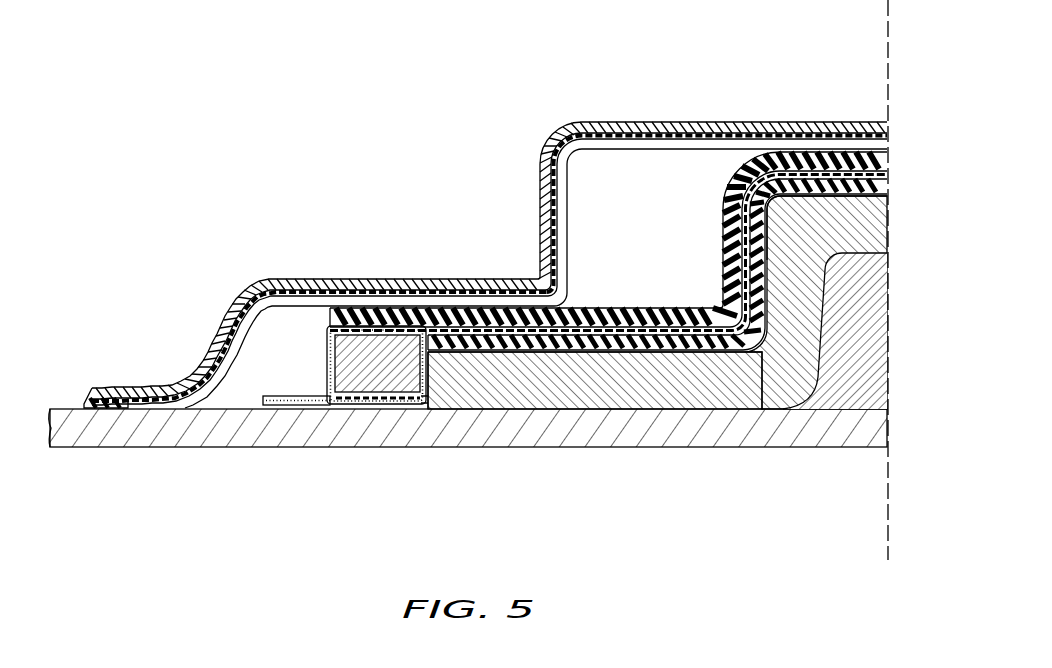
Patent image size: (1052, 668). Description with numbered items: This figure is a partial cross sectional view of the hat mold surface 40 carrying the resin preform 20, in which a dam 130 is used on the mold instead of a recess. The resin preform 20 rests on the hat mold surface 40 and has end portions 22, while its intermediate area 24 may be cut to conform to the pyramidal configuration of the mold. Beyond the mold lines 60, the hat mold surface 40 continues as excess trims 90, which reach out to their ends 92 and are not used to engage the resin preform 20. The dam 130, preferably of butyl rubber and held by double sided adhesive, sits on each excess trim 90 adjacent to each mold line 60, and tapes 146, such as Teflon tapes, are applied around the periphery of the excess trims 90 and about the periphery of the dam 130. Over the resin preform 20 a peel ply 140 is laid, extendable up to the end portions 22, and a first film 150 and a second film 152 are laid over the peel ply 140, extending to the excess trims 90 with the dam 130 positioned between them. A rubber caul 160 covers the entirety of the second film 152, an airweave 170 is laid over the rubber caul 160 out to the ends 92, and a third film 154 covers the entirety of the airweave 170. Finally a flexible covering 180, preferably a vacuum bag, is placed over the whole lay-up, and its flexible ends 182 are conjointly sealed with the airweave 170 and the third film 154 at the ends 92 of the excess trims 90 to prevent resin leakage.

The resin preform 20 is at (667, 380).
The end portions 22 is at (425, 382).
The intermediate area 24 is at (878, 212).
The hat mold surface 40 is at (891, 343).
The mold lines 60 is at (438, 384).
The excess trims 90 is at (166, 433).
The ends 92 is at (66, 433).
The dam 130 is at (353, 380).
The peel ply 140 is at (555, 350).
The tapes 146 is at (323, 340).
The first film 150 is at (475, 332).
The second film 152 is at (443, 325).
The third film 154 is at (668, 130).
The rubber caul 160 is at (770, 165).
The airweave 170 is at (613, 148).
The flexible covering 180 is at (557, 131).
The flexible ends 182 is at (100, 388).